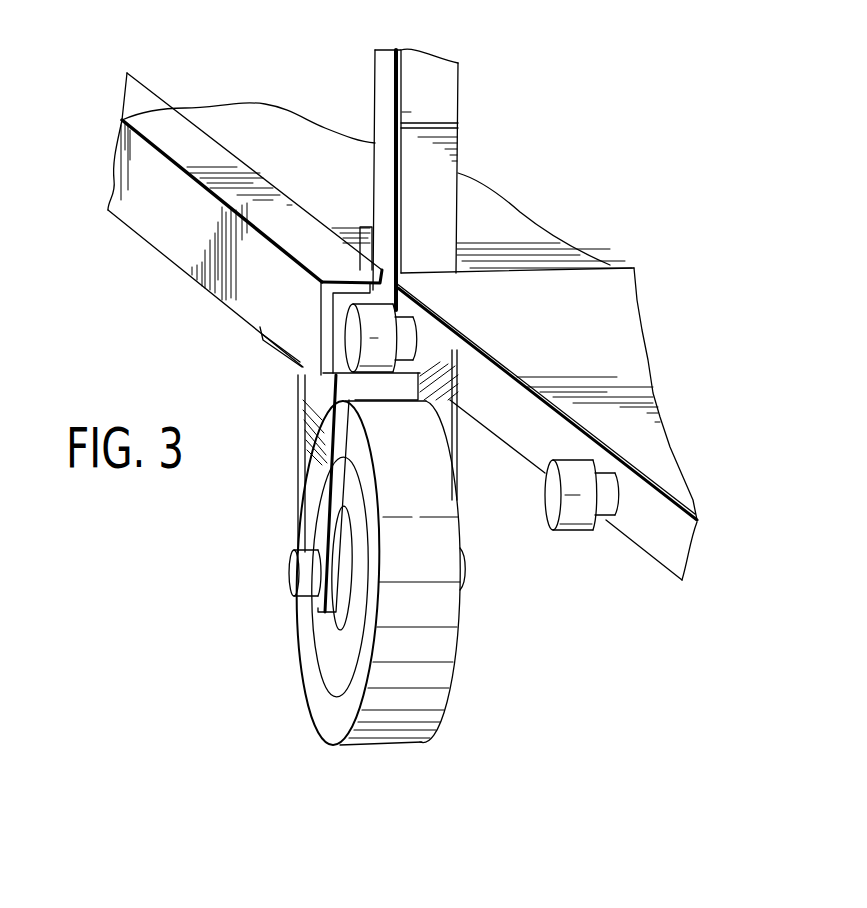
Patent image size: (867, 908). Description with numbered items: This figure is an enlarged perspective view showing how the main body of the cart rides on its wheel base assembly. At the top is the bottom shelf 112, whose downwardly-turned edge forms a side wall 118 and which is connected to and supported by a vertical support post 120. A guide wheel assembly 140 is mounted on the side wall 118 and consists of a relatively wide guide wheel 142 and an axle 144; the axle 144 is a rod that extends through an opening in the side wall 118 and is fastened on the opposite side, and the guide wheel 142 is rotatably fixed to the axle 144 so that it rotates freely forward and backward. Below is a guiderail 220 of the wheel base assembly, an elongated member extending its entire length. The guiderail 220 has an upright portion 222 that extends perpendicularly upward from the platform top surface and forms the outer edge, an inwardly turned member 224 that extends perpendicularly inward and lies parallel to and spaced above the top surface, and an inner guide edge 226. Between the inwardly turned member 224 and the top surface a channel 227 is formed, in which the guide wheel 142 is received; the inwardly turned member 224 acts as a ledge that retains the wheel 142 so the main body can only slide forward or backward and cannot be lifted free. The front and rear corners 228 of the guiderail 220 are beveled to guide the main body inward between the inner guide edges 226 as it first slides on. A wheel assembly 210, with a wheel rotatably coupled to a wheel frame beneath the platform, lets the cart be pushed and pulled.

The bottom shelf 112 is at (590, 278).
The side wall 118 is at (668, 537).
The vertical support post 120 is at (458, 112).
The guide wheel assembly 140 is at (312, 390).
The guide wheel 142 is at (343, 322).
The axle 144 is at (407, 328).
The wheel assembly 210 is at (298, 498).
The guiderail 220 is at (207, 220).
The upright portion 222 is at (187, 245).
The inwardly turned member 224 is at (145, 100).
The inner guide edge 226 is at (240, 158).
The channel 227 is at (300, 348).
The front and rear corners 228 is at (362, 272).